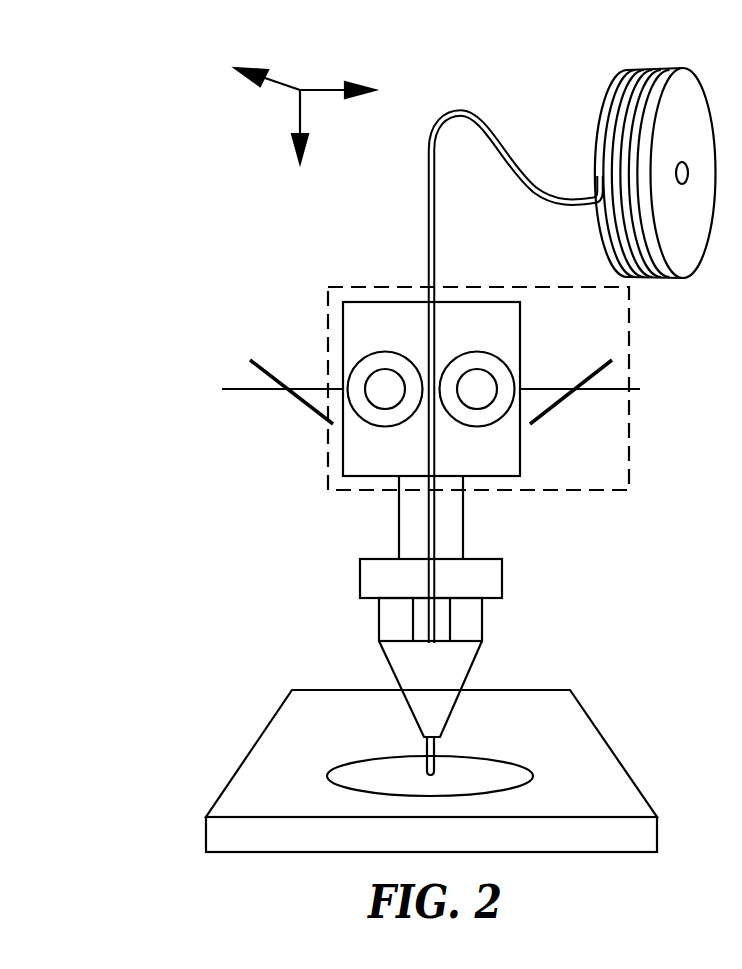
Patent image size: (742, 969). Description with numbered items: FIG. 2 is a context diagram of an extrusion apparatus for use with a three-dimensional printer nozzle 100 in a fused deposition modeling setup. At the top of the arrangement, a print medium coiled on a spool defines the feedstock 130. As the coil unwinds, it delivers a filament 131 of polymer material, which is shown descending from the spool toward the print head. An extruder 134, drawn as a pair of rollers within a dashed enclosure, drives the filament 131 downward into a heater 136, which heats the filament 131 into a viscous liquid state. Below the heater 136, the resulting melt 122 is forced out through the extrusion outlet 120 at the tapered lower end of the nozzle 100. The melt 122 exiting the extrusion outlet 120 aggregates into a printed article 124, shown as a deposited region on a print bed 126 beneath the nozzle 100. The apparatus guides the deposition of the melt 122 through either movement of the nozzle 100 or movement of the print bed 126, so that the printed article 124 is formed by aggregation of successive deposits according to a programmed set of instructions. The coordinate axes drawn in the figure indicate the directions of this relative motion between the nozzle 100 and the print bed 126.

The nozzle 100 is at (375, 439).
The extrusion outlet 120 is at (428, 738).
The melt 122 is at (438, 746).
The printed article 124 is at (497, 773).
The print bed 126 is at (335, 749).
The feedstock 130 is at (519, 167).
The filament 131 is at (427, 220).
The extruder 134 is at (629, 435).
The heater 136 is at (502, 579).